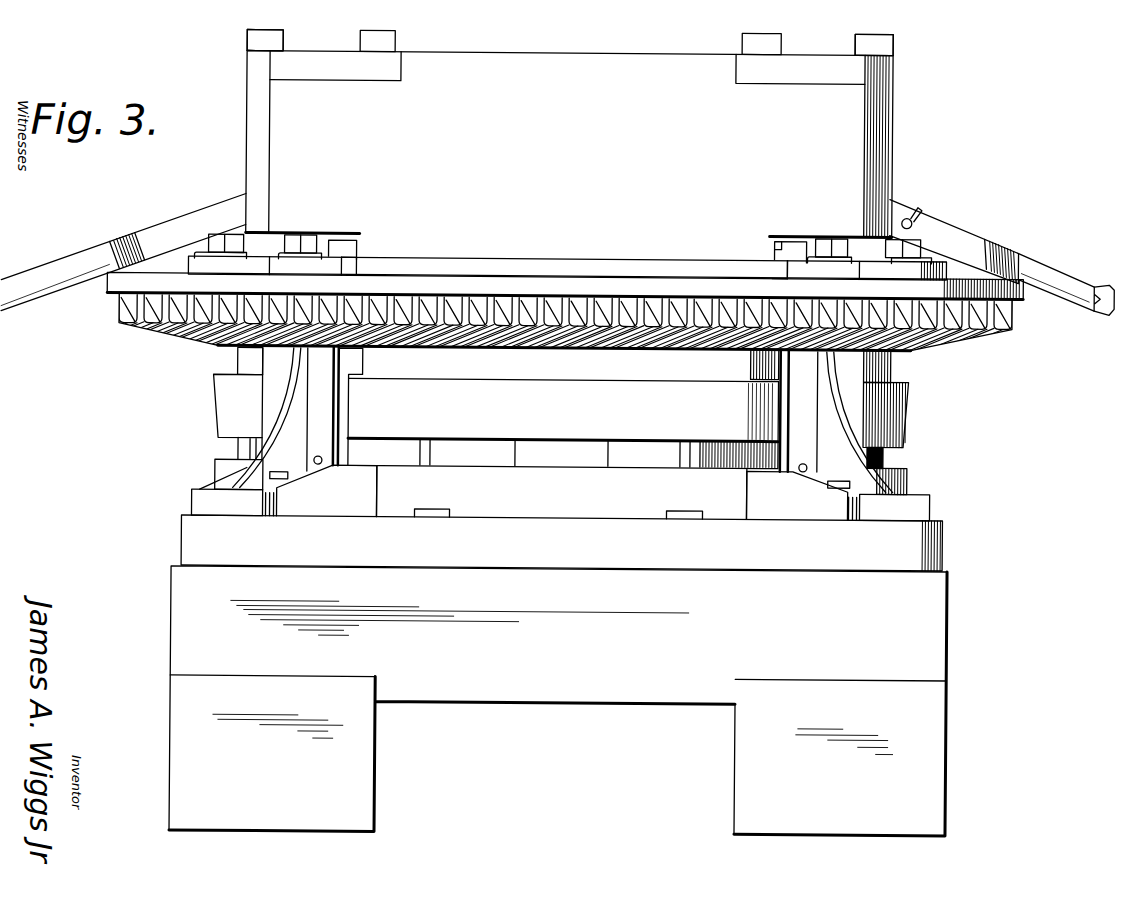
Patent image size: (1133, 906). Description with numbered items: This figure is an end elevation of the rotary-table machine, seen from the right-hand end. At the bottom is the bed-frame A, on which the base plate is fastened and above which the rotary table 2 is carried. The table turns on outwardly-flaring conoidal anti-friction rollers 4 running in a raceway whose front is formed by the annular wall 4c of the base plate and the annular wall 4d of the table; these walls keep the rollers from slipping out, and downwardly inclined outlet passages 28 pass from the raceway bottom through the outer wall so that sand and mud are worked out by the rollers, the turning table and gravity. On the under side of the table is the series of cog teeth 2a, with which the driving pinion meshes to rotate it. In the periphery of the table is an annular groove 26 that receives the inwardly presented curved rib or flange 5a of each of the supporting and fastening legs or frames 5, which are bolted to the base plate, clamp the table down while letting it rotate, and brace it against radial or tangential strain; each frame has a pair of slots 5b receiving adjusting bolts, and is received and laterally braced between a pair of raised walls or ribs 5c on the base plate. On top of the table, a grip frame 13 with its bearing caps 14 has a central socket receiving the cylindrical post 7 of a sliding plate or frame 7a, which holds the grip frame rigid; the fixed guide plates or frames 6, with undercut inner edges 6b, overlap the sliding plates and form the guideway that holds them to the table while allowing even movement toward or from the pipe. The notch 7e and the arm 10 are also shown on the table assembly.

The rotary table 2 is at (1022, 300).
The cog teeth 2a is at (147, 336).
The anti-friction conoidal rollers 4 is at (535, 443).
The annular wall 4c is at (563, 440).
The annular wall 4d is at (561, 493).
The supporting and fastening legs or frames 5 is at (292, 420).
The curved rib or flange 5a is at (362, 362).
The slots 5b is at (318, 458).
The raised walls or ribs 5c is at (226, 475).
The guide frames or plates 6 is at (327, 250).
The inner edge 6b is at (371, 240).
The cylindrical post 7 is at (561, 543).
The sliding plate or frame 7a is at (567, 266).
The plate notch 7e is at (345, 266).
The lever arm 10 is at (126, 234).
The grip frame 13 is at (570, 134).
The bearing cap 14 is at (262, 60).
The annular groove 26 is at (245, 364).
The outlet passages 28 is at (432, 510).
The bed-frame A is at (558, 701).